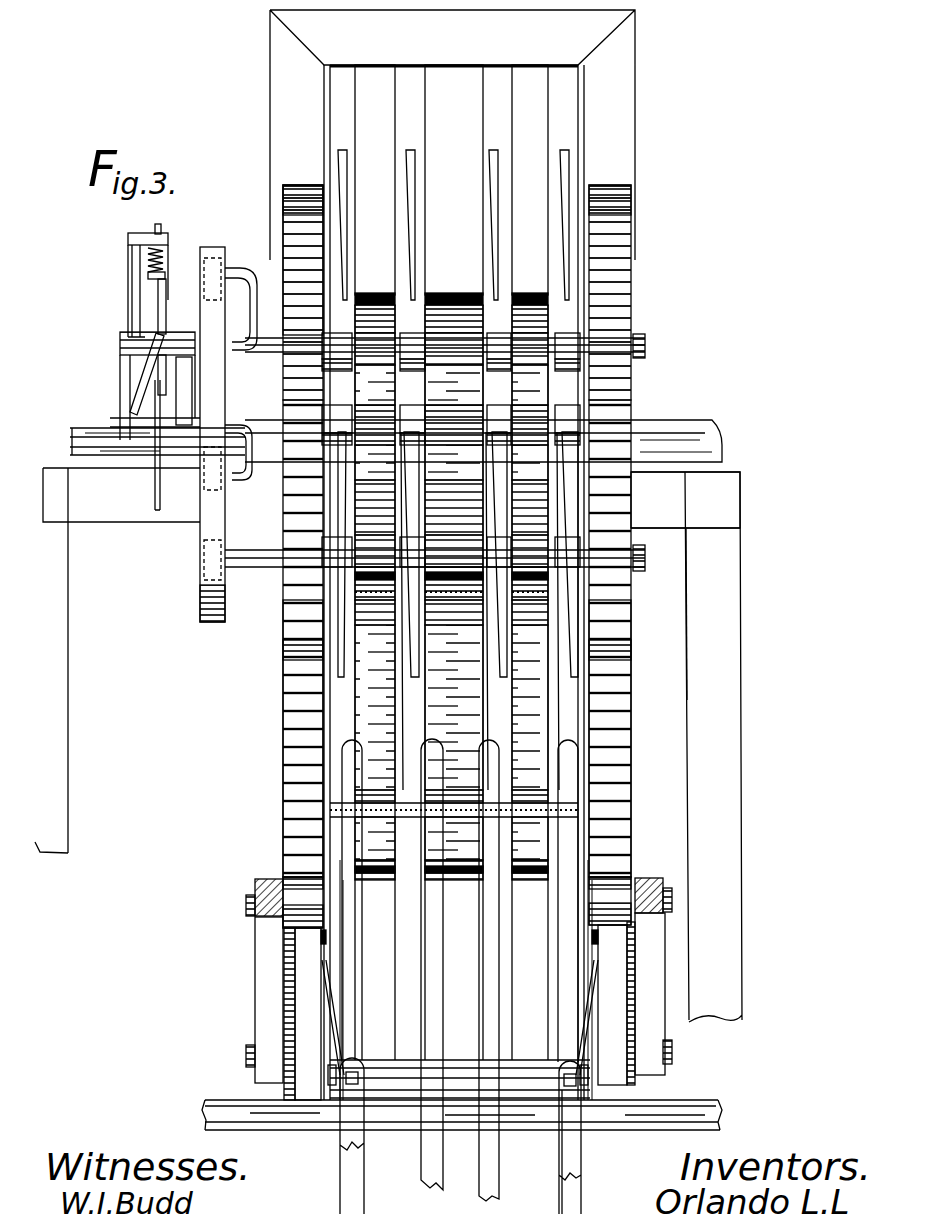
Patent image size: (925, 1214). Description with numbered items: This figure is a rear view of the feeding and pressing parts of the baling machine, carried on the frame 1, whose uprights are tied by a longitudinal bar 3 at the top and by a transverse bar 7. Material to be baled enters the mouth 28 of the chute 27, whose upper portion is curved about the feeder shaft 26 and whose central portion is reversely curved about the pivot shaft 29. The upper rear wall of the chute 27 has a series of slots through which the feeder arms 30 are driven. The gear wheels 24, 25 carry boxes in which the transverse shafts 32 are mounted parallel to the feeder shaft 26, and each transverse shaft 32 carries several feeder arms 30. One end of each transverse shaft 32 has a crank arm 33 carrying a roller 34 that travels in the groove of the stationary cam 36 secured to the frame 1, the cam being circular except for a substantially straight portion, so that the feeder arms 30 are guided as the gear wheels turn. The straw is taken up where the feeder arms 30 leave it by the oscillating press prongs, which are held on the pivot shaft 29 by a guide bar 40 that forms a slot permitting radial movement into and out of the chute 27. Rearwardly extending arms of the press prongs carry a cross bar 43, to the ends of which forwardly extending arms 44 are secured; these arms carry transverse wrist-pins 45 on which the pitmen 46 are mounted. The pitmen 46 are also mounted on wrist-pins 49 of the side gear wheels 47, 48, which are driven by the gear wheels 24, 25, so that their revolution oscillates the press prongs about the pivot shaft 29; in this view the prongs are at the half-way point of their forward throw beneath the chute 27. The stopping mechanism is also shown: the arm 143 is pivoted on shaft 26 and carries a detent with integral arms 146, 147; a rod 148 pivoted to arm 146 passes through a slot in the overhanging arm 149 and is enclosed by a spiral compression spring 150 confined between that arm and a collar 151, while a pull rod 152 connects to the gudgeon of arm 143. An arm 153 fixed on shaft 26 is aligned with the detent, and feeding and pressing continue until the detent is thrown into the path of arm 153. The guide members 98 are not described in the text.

The frame 1 is at (703, 614).
The longitudinal bar 3 is at (744, 505).
The transverse bar 7 is at (662, 500).
The gear wheel 24 is at (300, 243).
The gear wheel 25 is at (612, 303).
The feeder shaft 26 is at (715, 440).
The chute 27 is at (454, 562).
The mouth 28 is at (645, 85).
The pivot shaft 29 is at (732, 1120).
The feeder arms 30 is at (565, 172).
The transverse shafts 32 is at (640, 345).
The crank arm 33 is at (245, 302).
The roller 34 is at (230, 250).
The stationary cam 36 is at (198, 607).
The guide bar 40 is at (352, 1130).
The cross bar 43 is at (520, 1062).
The forwardly extending arms 44 is at (305, 1010).
The wrist-pins 45 is at (248, 905).
The pitmen 46 is at (268, 982).
The gear wheel 47 is at (280, 770).
The gear wheel 48 is at (640, 778).
The wrist-pins 49 is at (242, 1056).
The push rods 98 is at (432, 940).
The arm 143 is at (135, 425).
The arm 146 is at (162, 310).
The arm 147 is at (165, 365).
The rod 148 is at (152, 232).
The overhanging arm 149 is at (138, 241).
The spiral compression spring 150 is at (148, 265).
The collar 151 is at (150, 272).
The pull rod 152 is at (142, 382).
The arm 153 is at (188, 397).